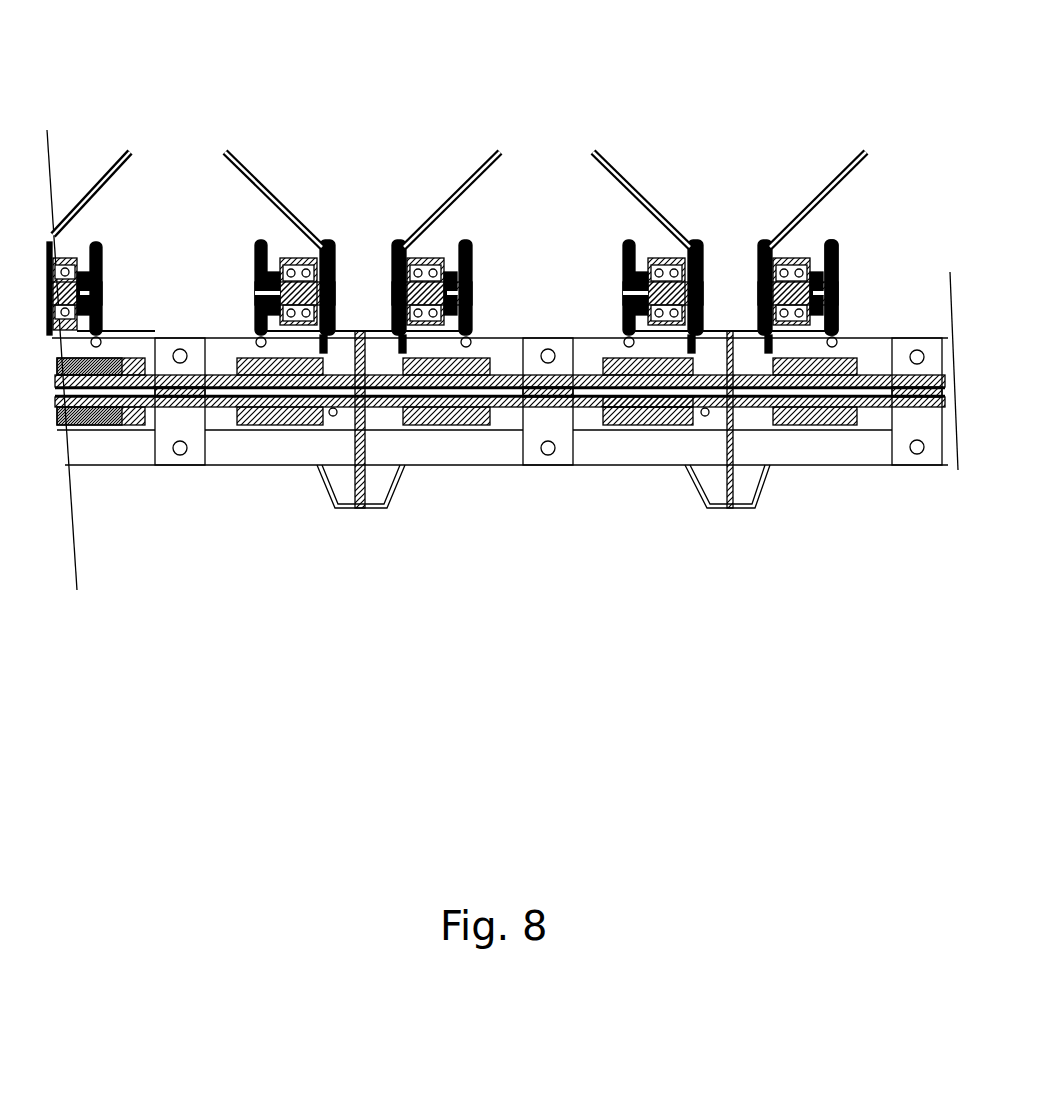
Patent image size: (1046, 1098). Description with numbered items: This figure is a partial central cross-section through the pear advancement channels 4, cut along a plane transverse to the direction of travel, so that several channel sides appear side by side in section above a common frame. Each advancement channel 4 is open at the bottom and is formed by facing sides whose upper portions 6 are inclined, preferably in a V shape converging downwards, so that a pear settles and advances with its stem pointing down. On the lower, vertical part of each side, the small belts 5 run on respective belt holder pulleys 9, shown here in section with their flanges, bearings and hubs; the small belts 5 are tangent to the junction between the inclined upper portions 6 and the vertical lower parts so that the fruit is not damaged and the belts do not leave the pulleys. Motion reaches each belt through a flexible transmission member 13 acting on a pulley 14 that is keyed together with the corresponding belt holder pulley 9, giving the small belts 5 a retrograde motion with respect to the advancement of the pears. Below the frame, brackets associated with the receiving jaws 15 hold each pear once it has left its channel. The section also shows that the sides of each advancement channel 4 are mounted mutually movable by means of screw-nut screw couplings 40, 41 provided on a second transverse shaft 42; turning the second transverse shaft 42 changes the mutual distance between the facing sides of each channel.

The advancement channel 4 is at (683, 138).
The small belt 5 is at (397, 240).
The upper portion 6 is at (450, 193).
The belt holder pulley 9 is at (345, 330).
The flexible transmission member 13 is at (832, 240).
The pulley 14 is at (838, 262).
The receiving jaw 15 is at (392, 508).
The screw-nut screw coupling 40 is at (625, 432).
The screw-nut screw coupling 41 is at (818, 425).
The second transverse shaft 42 is at (593, 408).